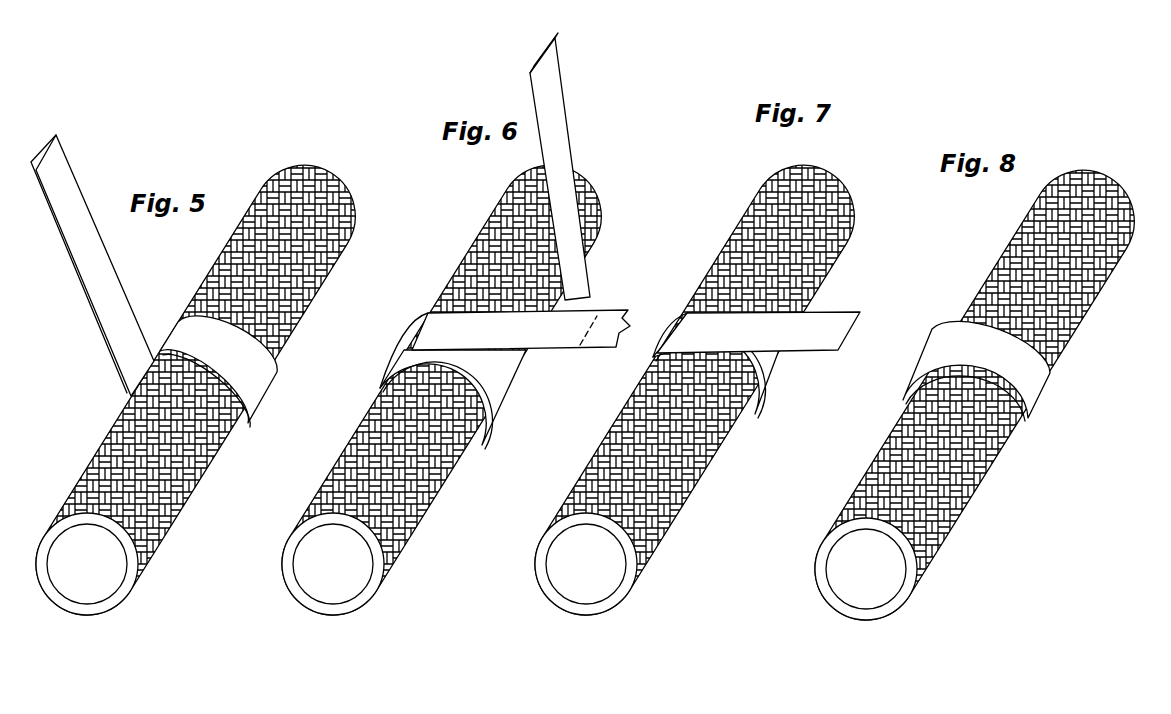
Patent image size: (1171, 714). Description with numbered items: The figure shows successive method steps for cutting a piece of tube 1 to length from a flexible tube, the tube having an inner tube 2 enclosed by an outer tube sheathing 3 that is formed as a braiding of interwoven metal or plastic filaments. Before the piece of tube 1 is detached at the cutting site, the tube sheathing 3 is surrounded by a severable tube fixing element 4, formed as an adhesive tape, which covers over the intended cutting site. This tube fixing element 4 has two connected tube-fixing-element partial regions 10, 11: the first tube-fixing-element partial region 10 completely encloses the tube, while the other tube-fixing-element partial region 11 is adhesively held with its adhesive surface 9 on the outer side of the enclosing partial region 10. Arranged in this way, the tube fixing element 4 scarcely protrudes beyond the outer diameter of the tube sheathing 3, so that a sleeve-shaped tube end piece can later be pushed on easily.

In FIG. 5, the piece of tube 1 is at (196, 353).
In FIG. 6, the piece of tube 1 is at (462, 381).
In FIG. 7, the piece of tube 1 is at (707, 373).
In FIG. 8, the piece of tube 1 is at (966, 367).
In FIG. 5, the inner tube 2 is at (135, 591).
In FIG. 6, the inner tube 2 is at (333, 564).
In FIG. 7, the inner tube 2 is at (633, 591).
In FIG. 8, the inner tube 2 is at (824, 588).
In FIG. 5, the tube sheathing 3 is at (330, 273).
In FIG. 6, the tube sheathing 3 is at (442, 390).
In FIG. 7, the tube sheathing 3 is at (824, 262).
In FIG. 8, the tube sheathing 3 is at (934, 535).
In FIG. 5, the tube fixing element 4 is at (156, 297).
In FIG. 5, the adhesive surface 9 is at (92, 265).
In FIG. 5, the tube-fixing-element partial region 10 is at (256, 370).
In FIG. 6, the tube-fixing-element partial region 10 is at (496, 386).
In FIG. 7, the tube-fixing-element partial region 10 is at (745, 395).
In FIG. 8, the tube-fixing-element partial region 10 is at (1006, 392).
In FIG. 6, the tube-fixing-element partial region 11 is at (535, 346).
In FIG. 7, the tube-fixing-element partial region 11 is at (804, 346).
In FIG. 8, the tube-fixing-element partial region 11 is at (1012, 354).